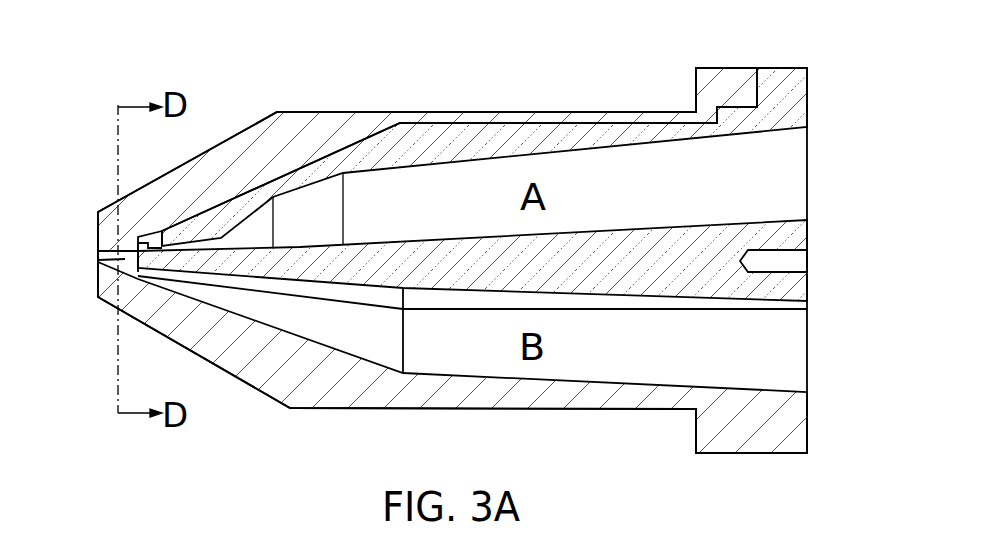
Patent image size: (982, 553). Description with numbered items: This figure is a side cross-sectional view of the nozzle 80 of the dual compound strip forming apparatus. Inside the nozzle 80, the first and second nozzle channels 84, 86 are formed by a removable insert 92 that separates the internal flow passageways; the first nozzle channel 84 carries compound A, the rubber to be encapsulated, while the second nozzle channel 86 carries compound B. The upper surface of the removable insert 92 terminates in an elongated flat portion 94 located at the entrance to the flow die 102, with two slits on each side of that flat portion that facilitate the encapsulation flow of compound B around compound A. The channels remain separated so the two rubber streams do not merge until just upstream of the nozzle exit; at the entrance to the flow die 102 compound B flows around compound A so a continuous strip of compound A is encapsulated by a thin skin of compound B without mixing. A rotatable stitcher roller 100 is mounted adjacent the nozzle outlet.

The nozzle 80 is at (292, 108).
The first nozzle channel 84 is at (798, 176).
The second nozzle channel 86 is at (798, 345).
The removable insert 92 is at (781, 127).
The elongated flat portion 94 is at (174, 228).
The stitcher roller 100 is at (110, 253).
The flow die 102 is at (127, 262).